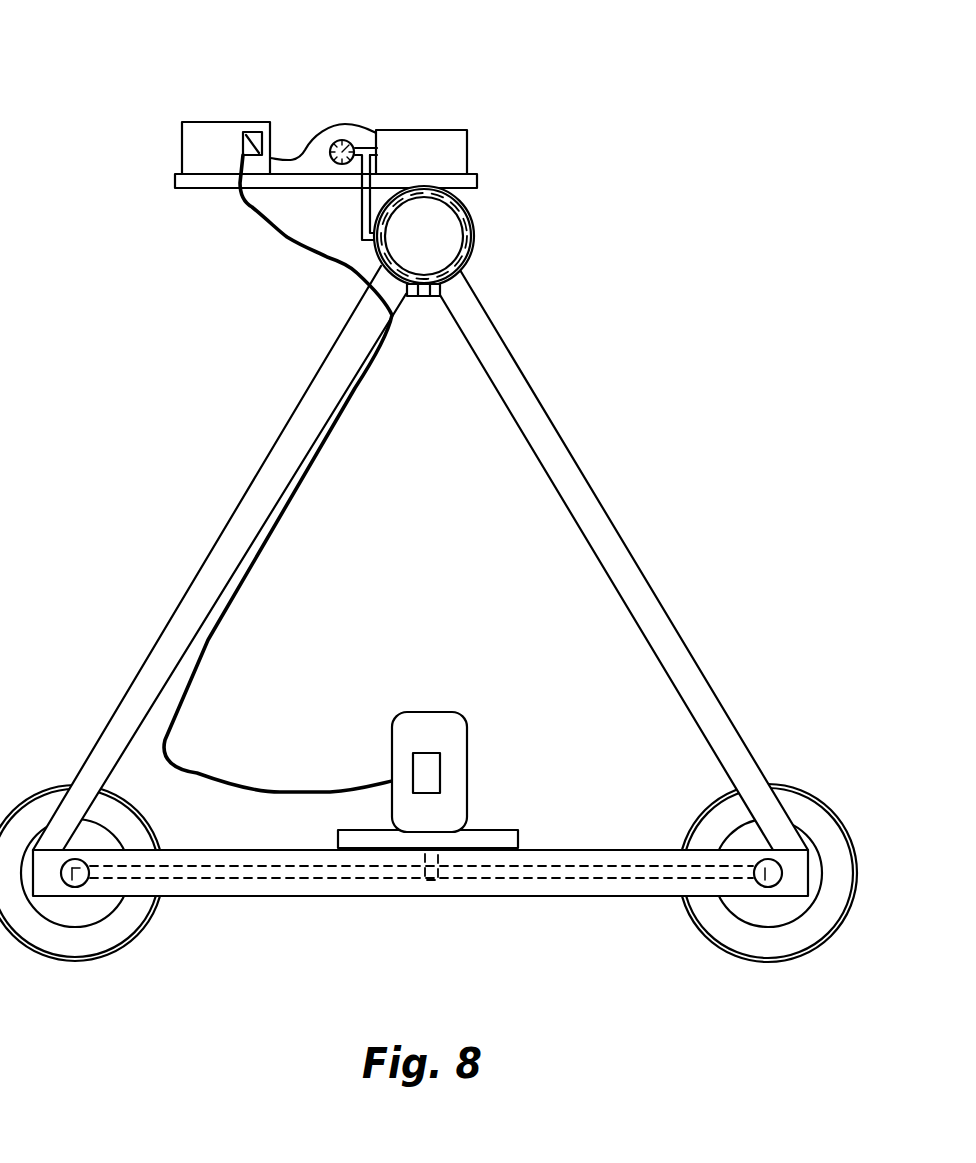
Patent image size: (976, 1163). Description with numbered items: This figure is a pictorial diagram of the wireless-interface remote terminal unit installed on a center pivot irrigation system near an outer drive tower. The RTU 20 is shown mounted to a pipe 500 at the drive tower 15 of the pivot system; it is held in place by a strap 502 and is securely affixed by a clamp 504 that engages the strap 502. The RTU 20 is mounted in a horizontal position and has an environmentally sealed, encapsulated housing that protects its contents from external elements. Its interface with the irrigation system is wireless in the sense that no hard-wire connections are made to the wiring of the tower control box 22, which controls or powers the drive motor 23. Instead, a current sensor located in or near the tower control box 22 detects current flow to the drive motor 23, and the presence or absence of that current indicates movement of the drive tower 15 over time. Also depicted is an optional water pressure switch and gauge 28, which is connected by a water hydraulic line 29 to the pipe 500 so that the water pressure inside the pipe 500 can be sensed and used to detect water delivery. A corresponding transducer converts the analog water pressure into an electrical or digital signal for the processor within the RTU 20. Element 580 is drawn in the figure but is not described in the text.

The drive tower 15 is at (613, 535).
The RTU 20 is at (448, 122).
The tower control box 22 is at (182, 128).
The drive motor 23 is at (470, 748).
The water pressure switch and gauge 28 is at (330, 150).
The water hydraulic line 29 is at (363, 205).
The pipe 500 is at (463, 230).
The strap 502 is at (467, 208).
The clamp 504 is at (423, 296).
The cable 580 is at (220, 622).